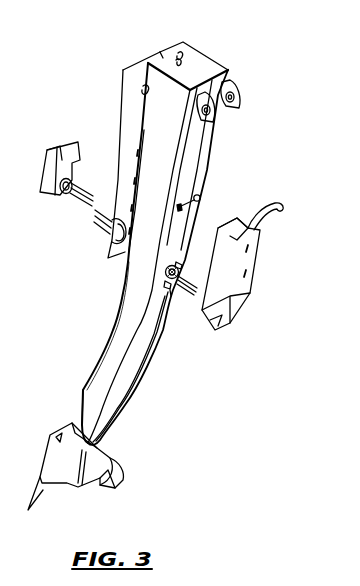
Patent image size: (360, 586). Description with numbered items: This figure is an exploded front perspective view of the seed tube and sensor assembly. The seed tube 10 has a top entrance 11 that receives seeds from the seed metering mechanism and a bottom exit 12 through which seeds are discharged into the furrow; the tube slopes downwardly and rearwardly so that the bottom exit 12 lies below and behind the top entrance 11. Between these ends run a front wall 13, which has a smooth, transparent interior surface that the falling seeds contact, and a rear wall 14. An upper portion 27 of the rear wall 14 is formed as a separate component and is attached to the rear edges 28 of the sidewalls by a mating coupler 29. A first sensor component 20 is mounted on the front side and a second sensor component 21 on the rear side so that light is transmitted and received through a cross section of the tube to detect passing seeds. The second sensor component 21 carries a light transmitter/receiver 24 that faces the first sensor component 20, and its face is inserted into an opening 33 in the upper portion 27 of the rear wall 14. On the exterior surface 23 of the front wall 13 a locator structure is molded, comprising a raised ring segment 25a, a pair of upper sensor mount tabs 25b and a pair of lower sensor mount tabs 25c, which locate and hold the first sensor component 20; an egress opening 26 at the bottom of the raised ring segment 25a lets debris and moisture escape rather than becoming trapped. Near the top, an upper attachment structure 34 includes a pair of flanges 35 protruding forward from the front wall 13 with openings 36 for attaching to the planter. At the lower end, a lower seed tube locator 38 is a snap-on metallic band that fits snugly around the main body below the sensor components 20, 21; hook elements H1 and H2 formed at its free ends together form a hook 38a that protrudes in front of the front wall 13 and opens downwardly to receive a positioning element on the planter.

The seed tube 10 is at (230, 68).
The top entrance 11 is at (196, 70).
The bottom exit 12 is at (82, 405).
The front wall 13 is at (150, 365).
The rear wall 14 is at (123, 293).
The first sensor component 20 is at (253, 273).
The second sensor component 21 is at (57, 198).
The exterior surface 23 is at (165, 271).
The light transmitter/receiver 24 is at (68, 178).
The raised ring segment 25a is at (181, 265).
The upper sensor mount tabs 25b is at (199, 196).
The lower sensor mount tabs 25c is at (167, 285).
The egress opening 26 is at (172, 292).
The upper portion of the rear wall 27 is at (133, 58).
The rear edges of the sidewalls 28 is at (180, 53).
The mating coupler 29 is at (145, 87).
The opening 33 is at (113, 230).
The upper attachment structure 34 is at (242, 98).
The flanges 35 is at (230, 103).
The openings 36 is at (238, 98).
The lower seed tube locator 38 is at (120, 462).
The hook 38a is at (120, 477).
The hook element H1 is at (108, 485).
The hook element H2 is at (120, 472).